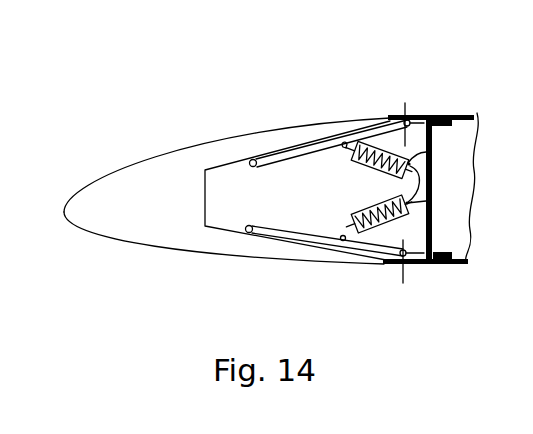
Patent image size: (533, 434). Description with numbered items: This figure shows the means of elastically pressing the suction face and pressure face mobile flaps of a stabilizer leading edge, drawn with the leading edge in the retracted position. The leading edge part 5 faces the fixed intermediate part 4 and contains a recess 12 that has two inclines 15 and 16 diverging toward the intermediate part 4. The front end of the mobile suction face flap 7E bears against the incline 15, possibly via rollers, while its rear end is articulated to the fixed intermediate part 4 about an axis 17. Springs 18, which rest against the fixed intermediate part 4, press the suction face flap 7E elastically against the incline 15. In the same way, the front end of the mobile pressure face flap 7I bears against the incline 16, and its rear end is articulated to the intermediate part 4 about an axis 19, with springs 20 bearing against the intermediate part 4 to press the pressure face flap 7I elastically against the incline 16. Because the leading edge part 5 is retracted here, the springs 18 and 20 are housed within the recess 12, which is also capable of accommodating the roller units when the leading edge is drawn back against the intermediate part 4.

The intermediate part 4 is at (480, 121).
The leading edge part 5 is at (147, 183).
The mobile suction face flap 7E is at (317, 143).
The mobile pressure face flap 7I is at (315, 247).
The recess 12 is at (304, 196).
The incline 15 is at (274, 150).
The incline 16 is at (282, 245).
The axis 17 is at (413, 113).
The springs 18 is at (370, 167).
The axis 19 is at (407, 267).
The springs 20 is at (367, 208).